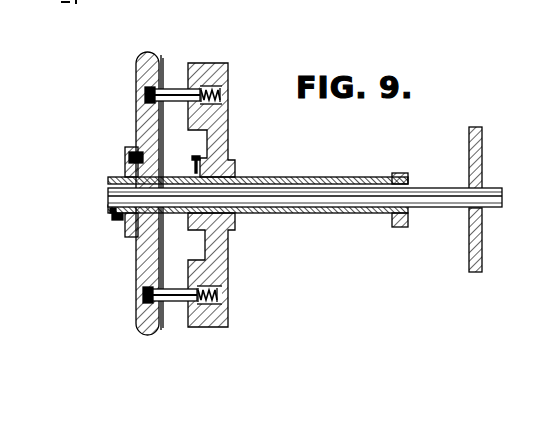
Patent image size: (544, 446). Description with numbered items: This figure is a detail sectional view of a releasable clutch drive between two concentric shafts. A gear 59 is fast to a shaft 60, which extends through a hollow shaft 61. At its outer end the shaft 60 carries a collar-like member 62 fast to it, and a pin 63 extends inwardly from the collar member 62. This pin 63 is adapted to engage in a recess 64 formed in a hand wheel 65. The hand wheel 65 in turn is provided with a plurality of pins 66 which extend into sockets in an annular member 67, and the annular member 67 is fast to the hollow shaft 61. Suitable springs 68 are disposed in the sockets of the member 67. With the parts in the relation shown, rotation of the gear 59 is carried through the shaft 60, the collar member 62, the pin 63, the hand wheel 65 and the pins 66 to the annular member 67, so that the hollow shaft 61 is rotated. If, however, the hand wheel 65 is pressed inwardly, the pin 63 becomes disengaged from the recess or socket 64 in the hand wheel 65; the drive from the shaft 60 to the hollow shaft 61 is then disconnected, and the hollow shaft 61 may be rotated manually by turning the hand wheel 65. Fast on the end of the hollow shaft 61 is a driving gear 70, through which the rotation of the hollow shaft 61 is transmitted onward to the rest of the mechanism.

The gear 59 is at (484, 150).
The shaft 60 is at (424, 195).
The hollow shaft 61 is at (281, 179).
The collar-like member 62 is at (128, 237).
The pin 63 is at (128, 158).
The recess 64 is at (146, 143).
The hand wheel 65 is at (147, 270).
The pins 66 is at (172, 92).
The annular member 67 is at (216, 272).
The springs 68 is at (228, 77).
The driving gear 70 is at (396, 173).